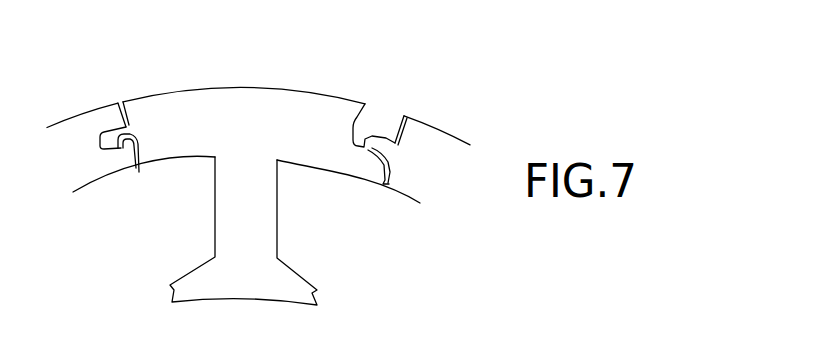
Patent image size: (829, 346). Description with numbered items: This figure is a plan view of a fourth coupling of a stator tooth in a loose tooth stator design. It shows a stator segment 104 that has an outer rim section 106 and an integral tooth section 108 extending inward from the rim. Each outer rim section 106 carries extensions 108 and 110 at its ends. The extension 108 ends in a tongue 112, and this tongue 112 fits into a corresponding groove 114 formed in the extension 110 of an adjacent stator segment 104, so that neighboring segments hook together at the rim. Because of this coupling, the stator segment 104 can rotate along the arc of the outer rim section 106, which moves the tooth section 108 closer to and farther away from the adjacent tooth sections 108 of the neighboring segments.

The stator segment 104 is at (61, 99).
The outer rim section 106 is at (277, 110).
The tooth section 108 is at (135, 108).
The extension 110 is at (92, 120).
The tongue 112 is at (123, 133).
The groove 114 is at (150, 160).